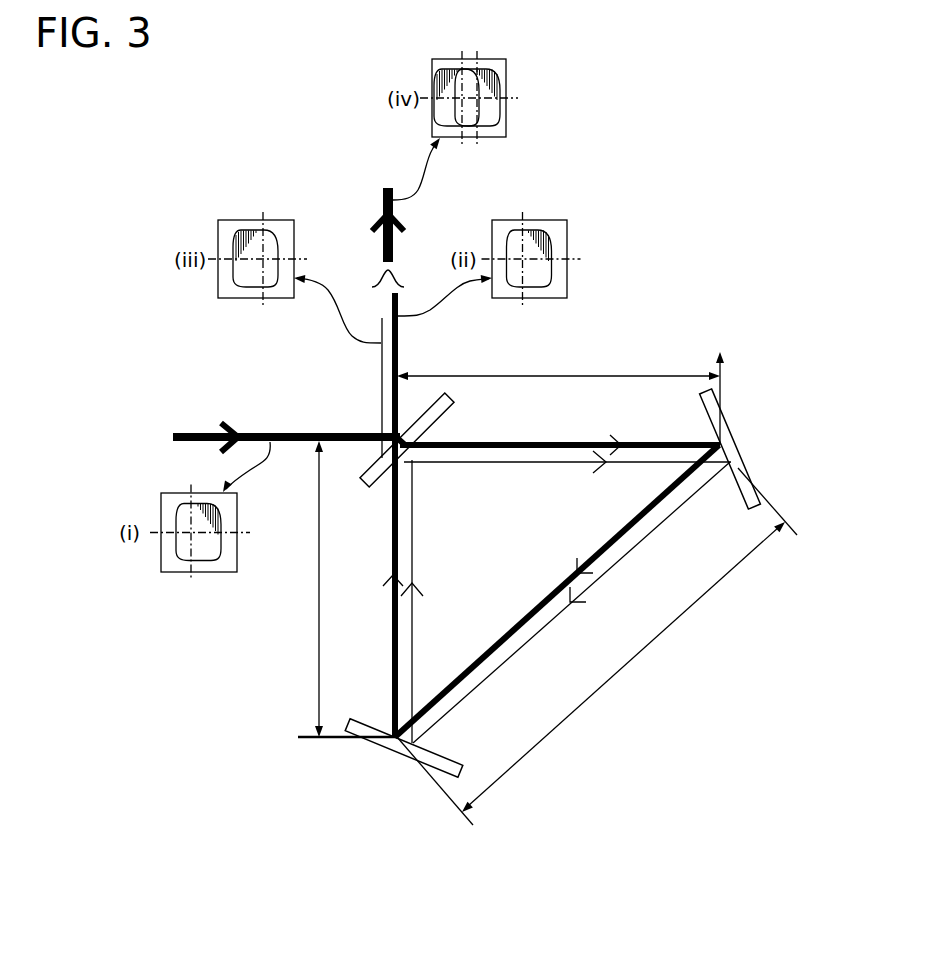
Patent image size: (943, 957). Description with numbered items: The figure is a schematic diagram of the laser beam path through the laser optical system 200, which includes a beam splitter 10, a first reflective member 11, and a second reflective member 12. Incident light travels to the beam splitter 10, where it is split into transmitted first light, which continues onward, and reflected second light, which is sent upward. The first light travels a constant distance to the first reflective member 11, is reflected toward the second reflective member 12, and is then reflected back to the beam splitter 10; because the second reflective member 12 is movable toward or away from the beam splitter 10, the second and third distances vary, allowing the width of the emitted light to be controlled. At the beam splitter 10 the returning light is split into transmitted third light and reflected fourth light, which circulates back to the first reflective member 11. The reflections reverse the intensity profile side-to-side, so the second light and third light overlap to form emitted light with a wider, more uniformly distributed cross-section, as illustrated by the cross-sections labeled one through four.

The beam splitter 10 is at (437, 415).
The first reflective member 11 is at (737, 445).
The second reflective member 12 is at (400, 756).
The laser optical system 200 is at (665, 272).